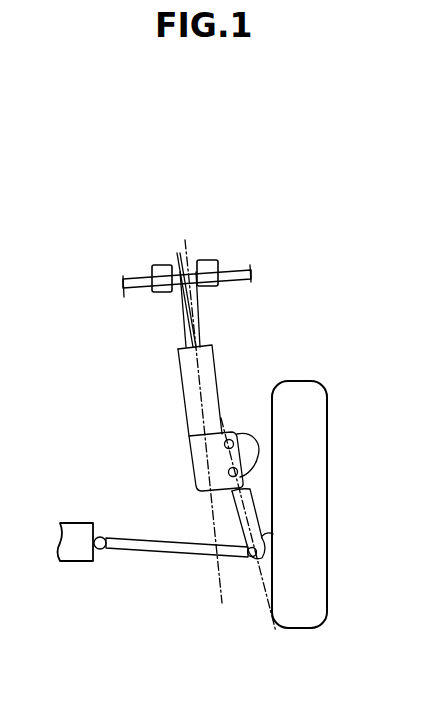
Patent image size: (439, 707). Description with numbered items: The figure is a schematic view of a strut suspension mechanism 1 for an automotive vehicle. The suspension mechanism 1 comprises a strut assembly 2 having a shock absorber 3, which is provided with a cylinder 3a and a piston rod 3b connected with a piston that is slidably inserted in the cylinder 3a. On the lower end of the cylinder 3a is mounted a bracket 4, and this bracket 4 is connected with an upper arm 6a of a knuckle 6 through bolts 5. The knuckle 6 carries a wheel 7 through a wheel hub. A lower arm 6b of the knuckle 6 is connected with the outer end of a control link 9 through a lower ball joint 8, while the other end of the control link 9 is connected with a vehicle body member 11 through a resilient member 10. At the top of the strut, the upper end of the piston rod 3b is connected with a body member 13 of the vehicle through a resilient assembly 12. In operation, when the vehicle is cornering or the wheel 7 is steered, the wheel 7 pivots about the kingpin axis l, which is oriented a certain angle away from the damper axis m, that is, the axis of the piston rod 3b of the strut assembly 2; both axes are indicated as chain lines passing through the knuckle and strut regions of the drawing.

The suspension mechanism 1 is at (72, 421).
The strut assembly 2 is at (168, 376).
The shock absorber 3 is at (234, 300).
The cylinder 3a is at (210, 347).
The piston rod 3b is at (199, 318).
The bracket 4 is at (206, 490).
The bolts 5 is at (239, 474).
The knuckle 6 is at (278, 502).
The upper arm 6a is at (254, 476).
The lower arm 6b is at (263, 534).
The wheel 7 is at (315, 405).
The lower ball joint 8 is at (252, 560).
The control link 9 is at (237, 560).
The resilient member 10 is at (100, 551).
The vehicle body member 11 is at (72, 530).
The resilient assembly 12 is at (162, 266).
The body member 13 is at (127, 277).
The damper axis m is at (218, 582).
The kingpin axis l is at (266, 566).